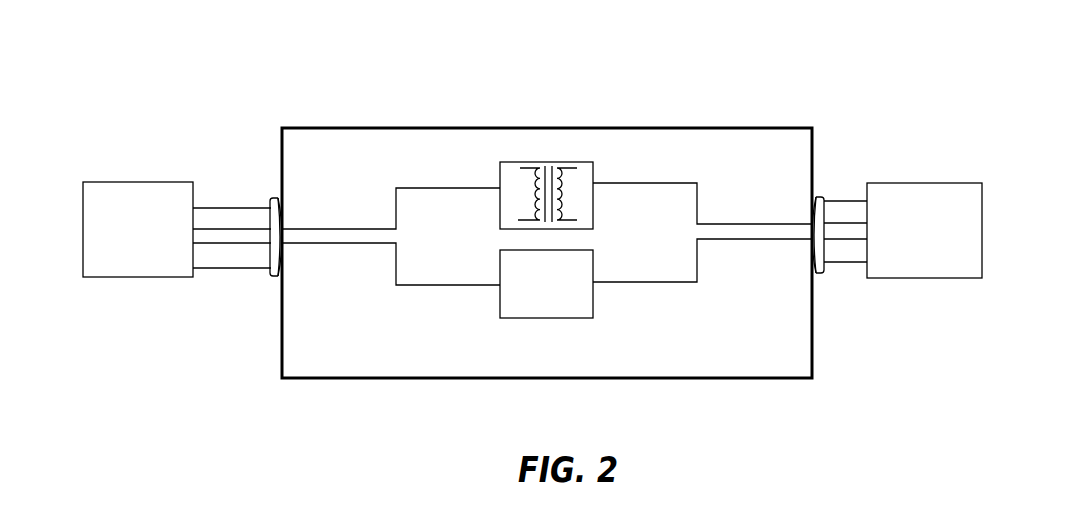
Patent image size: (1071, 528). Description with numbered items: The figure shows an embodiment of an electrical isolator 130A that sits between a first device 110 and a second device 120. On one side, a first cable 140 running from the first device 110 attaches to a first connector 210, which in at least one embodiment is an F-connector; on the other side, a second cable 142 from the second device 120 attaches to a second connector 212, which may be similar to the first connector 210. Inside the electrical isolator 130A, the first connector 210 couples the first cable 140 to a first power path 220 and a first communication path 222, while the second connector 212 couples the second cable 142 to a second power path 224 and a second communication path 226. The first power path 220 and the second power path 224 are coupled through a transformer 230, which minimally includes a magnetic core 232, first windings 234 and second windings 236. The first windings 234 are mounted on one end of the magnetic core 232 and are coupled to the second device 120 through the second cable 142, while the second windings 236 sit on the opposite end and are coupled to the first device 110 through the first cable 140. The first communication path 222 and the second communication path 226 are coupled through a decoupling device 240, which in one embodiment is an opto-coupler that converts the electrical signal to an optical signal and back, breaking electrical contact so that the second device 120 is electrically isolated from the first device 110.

The first device 110 is at (905, 241).
The second device 120 is at (118, 241).
The electrical isolator 130A is at (808, 90).
The first cable 140 is at (840, 200).
The second cable 142 is at (235, 207).
The first connector 210 is at (818, 273).
The second connector 212 is at (270, 274).
The first power path 220 is at (722, 223).
The first communication path 222 is at (772, 240).
The second power path 224 is at (320, 228).
The second communication path 226 is at (440, 287).
The transformer 230 is at (533, 180).
The magnetic core 232 is at (545, 163).
The first windings 234 is at (533, 170).
The second windings 236 is at (559, 202).
The decoupling device 240 is at (593, 315).